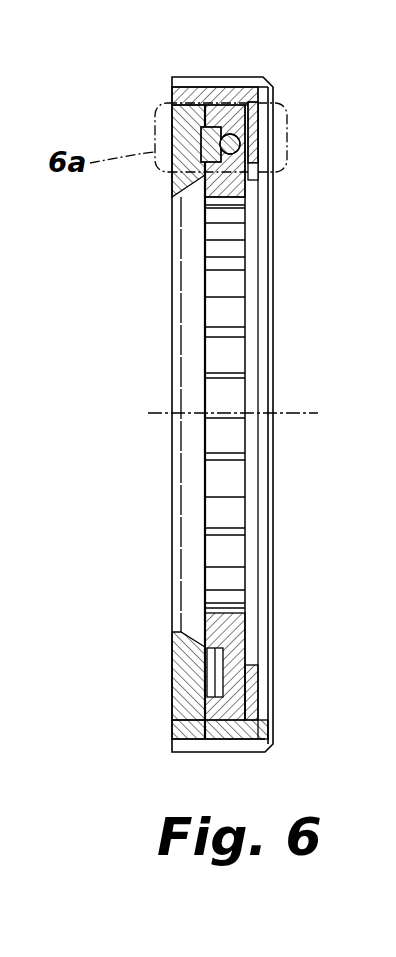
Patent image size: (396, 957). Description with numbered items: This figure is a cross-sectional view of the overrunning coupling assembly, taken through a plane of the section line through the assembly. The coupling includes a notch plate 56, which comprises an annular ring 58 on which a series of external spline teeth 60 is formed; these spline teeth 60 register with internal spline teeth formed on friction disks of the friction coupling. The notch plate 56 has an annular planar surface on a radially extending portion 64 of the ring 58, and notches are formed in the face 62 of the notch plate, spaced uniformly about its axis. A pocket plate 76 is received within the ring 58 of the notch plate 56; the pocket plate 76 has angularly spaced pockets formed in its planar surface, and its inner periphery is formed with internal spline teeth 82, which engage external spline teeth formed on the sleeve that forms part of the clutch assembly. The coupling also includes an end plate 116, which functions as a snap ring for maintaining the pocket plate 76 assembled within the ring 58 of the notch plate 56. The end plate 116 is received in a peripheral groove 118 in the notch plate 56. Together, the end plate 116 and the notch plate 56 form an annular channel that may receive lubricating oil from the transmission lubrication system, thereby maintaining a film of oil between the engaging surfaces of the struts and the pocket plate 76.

The notch plate 56 is at (228, 737).
The annular ring 58 is at (210, 740).
The external spline teeth 60 is at (188, 745).
The face 62 is at (208, 710).
The radially extending portion 64 is at (190, 676).
The pocket plate 76 is at (228, 175).
The internal spline teeth 82 is at (228, 356).
The end plate 116 is at (253, 132).
The peripheral groove 118 is at (255, 108).